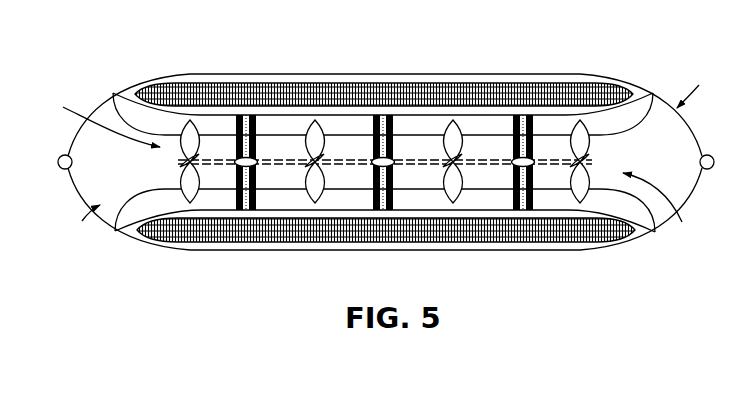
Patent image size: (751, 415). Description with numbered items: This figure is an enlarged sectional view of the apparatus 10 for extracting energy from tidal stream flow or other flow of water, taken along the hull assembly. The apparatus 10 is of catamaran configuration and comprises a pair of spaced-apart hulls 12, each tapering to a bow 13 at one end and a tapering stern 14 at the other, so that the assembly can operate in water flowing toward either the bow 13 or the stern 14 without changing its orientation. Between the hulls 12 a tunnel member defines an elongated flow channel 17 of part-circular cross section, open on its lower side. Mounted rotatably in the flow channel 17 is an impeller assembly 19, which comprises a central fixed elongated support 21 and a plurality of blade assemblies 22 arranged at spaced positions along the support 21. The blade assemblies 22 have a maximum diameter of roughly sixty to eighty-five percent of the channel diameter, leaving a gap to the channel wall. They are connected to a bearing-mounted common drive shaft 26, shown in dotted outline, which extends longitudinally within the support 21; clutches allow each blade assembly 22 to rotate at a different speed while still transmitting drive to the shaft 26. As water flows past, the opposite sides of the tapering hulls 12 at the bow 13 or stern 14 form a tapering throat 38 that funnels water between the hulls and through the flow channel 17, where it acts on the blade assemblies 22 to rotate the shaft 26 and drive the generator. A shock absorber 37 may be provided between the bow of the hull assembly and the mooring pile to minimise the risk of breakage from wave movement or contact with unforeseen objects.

The apparatus 10 is at (357, 162).
The hull 12 is at (356, 77).
The bow 13 is at (657, 93).
The stern 14 is at (118, 97).
The flow channel 17 is at (97, 117).
The impeller assembly 19 is at (486, 152).
The central fixed elongated support 21 is at (290, 163).
The blade assembly 22 is at (200, 119).
The common drive shaft 26 is at (500, 166).
The shock absorber 37 is at (695, 84).
The tapering throat 38 is at (382, 208).